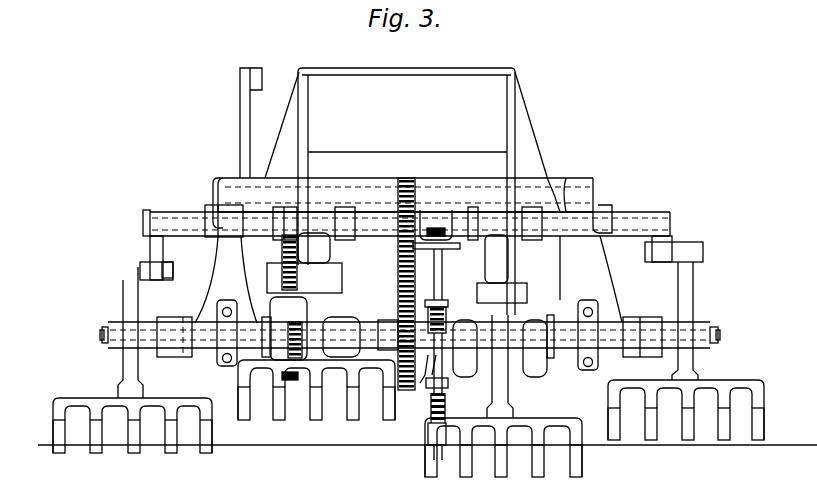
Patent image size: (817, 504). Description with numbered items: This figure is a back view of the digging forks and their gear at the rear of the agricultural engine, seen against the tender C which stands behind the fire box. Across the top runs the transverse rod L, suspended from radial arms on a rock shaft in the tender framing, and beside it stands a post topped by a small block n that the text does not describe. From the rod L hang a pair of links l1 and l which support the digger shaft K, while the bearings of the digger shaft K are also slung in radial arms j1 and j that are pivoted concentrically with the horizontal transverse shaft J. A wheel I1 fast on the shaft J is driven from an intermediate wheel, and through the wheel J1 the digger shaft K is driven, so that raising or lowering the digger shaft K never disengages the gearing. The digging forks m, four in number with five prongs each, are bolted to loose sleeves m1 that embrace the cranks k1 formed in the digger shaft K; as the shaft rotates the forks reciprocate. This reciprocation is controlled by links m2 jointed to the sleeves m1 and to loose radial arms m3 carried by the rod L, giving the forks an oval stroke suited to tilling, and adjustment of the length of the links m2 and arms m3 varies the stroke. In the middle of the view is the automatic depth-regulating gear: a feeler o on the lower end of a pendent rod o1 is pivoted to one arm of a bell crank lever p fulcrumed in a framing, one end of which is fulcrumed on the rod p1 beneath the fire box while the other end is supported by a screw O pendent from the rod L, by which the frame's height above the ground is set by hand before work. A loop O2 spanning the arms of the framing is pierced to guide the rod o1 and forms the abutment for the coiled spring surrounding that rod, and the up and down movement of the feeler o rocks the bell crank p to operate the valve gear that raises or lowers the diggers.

The tender C is at (406, 191).
The stop block n is at (262, 79).
The transverse rod L is at (146, 221).
The loose radial arm m3 is at (165, 249).
The link l1 is at (226, 280).
The link l is at (591, 279).
The wheel J1 is at (405, 245).
The wheel I1 is at (292, 381).
The screw O is at (441, 272).
The transverse shaft J is at (603, 360).
The digger shaft K is at (100, 334).
The crank k1 is at (106, 347).
The radial arm j1 is at (224, 356).
The radial arm j is at (580, 316).
The loose sleeve m1 is at (128, 292).
The link m2 is at (139, 300).
The digging fork m is at (92, 406).
The bell crank lever p is at (433, 345).
The rod p1 is at (430, 385).
The loop O2 is at (447, 385).
The pendent rod o1 is at (446, 405).
The feeler o is at (438, 458).